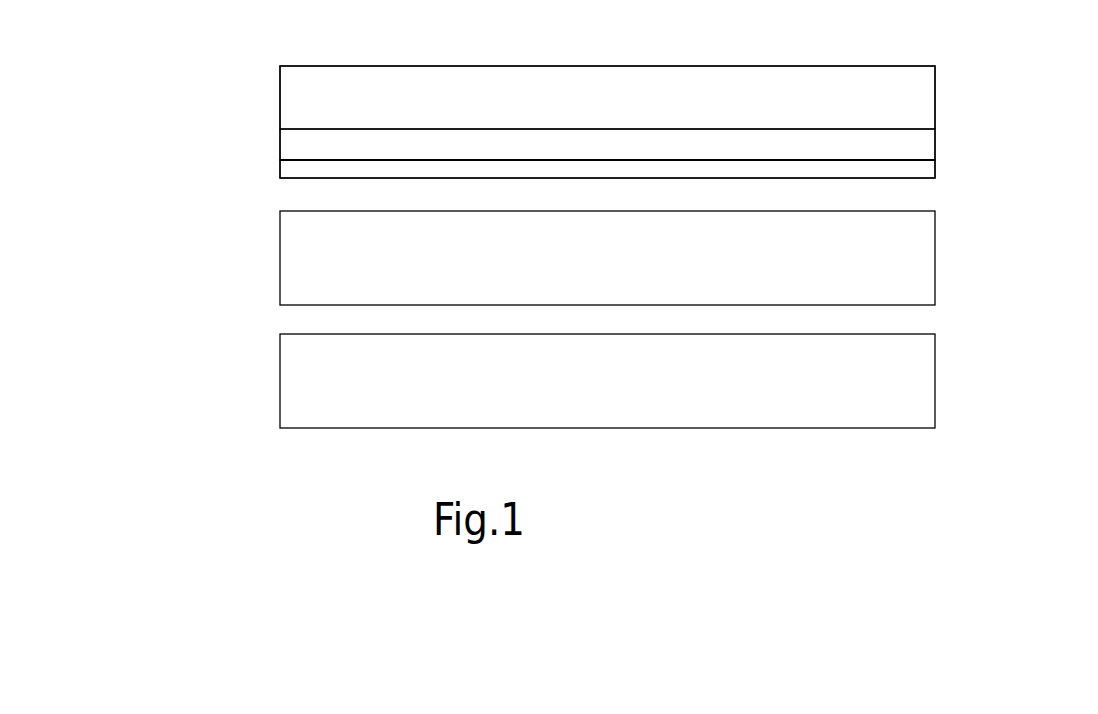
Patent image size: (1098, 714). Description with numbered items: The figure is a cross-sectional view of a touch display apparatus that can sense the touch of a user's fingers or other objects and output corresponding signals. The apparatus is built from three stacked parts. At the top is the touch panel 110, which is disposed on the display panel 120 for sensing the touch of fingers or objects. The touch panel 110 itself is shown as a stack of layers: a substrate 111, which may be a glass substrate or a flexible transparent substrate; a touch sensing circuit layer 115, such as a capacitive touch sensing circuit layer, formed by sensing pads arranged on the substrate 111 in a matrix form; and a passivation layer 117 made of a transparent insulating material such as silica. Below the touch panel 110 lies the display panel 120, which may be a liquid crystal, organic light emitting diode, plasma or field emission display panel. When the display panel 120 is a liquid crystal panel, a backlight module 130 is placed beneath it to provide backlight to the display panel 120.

The touch panel 110 is at (256, 125).
The substrate 111 is at (935, 95).
The touch sensing circuit layer 115 is at (935, 142).
The passivation layer 117 is at (935, 168).
The display panel 120 is at (935, 253).
The backlight module 130 is at (935, 378).